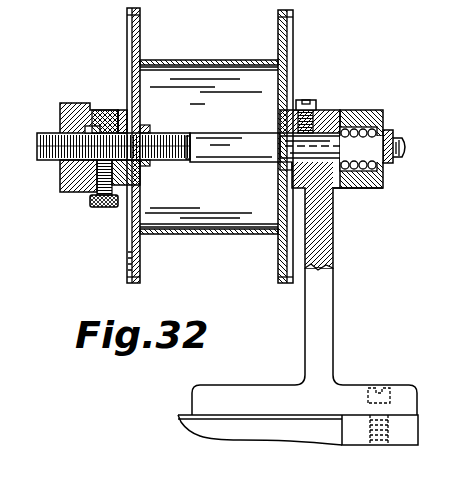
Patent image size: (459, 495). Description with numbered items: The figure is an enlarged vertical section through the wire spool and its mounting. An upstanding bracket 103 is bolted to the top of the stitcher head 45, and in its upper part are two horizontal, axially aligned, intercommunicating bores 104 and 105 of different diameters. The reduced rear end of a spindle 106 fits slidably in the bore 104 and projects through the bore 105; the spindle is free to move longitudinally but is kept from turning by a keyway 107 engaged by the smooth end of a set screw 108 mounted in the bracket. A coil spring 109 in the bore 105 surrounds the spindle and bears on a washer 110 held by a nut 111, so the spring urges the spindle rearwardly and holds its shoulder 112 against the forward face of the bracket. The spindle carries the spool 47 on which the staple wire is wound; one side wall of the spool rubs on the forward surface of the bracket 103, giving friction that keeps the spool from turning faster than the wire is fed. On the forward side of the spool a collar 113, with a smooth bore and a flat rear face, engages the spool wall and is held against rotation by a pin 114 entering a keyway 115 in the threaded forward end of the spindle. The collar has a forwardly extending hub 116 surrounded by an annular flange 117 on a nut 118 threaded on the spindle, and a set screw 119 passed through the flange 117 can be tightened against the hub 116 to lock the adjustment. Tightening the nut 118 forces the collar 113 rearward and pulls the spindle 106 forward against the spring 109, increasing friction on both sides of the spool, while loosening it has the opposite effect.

The spool 47 is at (291, 38).
The stitcher head 45 is at (312, 416).
The bracket 103 is at (326, 291).
The bore 104 is at (327, 174).
The bore 105 is at (365, 188).
The spindle 106 is at (237, 134).
The keyway 107 is at (337, 128).
The set screw 108 is at (316, 100).
The coil spring 109 is at (357, 124).
The washer 110 is at (389, 130).
The nut 111 is at (403, 158).
The shoulder 112 is at (280, 167).
The collar 113 is at (132, 179).
The pin 114 is at (132, 110).
The keyway 115 is at (52, 132).
The hub 116 is at (97, 130).
The annular flange 117 is at (107, 110).
The nut 118 is at (62, 177).
The set screw 119 is at (104, 208).